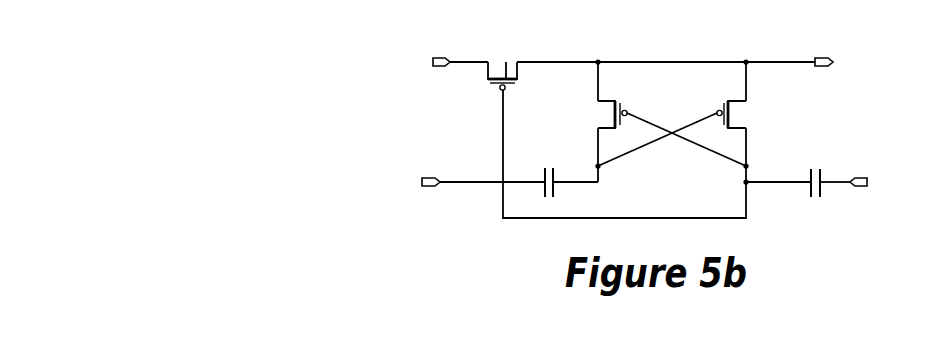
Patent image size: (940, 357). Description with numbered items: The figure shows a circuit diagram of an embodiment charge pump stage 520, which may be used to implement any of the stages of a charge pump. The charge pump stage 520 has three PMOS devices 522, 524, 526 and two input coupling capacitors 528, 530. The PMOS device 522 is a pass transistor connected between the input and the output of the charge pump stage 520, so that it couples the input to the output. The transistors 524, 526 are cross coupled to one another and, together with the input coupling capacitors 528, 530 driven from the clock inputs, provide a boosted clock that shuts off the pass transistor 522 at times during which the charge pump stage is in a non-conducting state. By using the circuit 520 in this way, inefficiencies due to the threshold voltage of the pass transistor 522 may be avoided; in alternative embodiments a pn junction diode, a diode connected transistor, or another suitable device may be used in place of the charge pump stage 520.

The charge pump stage 520 is at (380, 32).
The PMOS device 522 is at (498, 62).
The PMOS device 524 is at (598, 117).
The PMOS device 526 is at (742, 122).
The input coupling capacitor 528 is at (548, 165).
The input coupling capacitor 530 is at (812, 165).